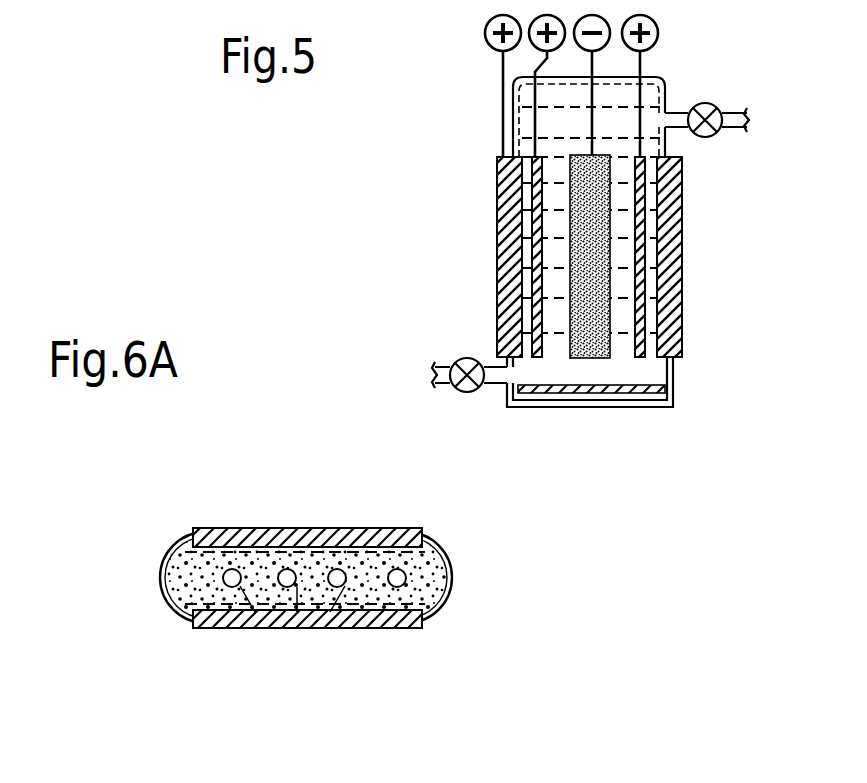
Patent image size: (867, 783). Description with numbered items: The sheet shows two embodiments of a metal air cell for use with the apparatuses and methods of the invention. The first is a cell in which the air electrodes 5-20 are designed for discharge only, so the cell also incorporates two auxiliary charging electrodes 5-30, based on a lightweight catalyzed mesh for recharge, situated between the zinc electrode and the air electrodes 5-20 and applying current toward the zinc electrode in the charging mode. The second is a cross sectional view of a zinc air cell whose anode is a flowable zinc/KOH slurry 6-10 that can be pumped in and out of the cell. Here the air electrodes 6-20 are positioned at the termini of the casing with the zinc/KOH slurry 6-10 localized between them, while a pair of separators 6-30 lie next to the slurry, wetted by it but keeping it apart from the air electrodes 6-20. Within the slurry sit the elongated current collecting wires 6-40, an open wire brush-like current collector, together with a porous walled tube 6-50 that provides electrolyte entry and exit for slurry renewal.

In FIG. 5, the air electrodes 5-20 is at (497, 233).
In FIG. 5, the auxiliary charging electrodes 5-30 is at (645, 263).
In FIG. 6A, the zinc/KOH slurry 6-10 is at (173, 582).
In FIG. 6A, the air electrodes 6-20 is at (402, 530).
In FIG. 6A, the separators 6-30 is at (400, 626).
In FIG. 6A, the current collector 6-40 is at (307, 645).
In FIG. 6A, the porous walled tube 6-50 is at (230, 569).